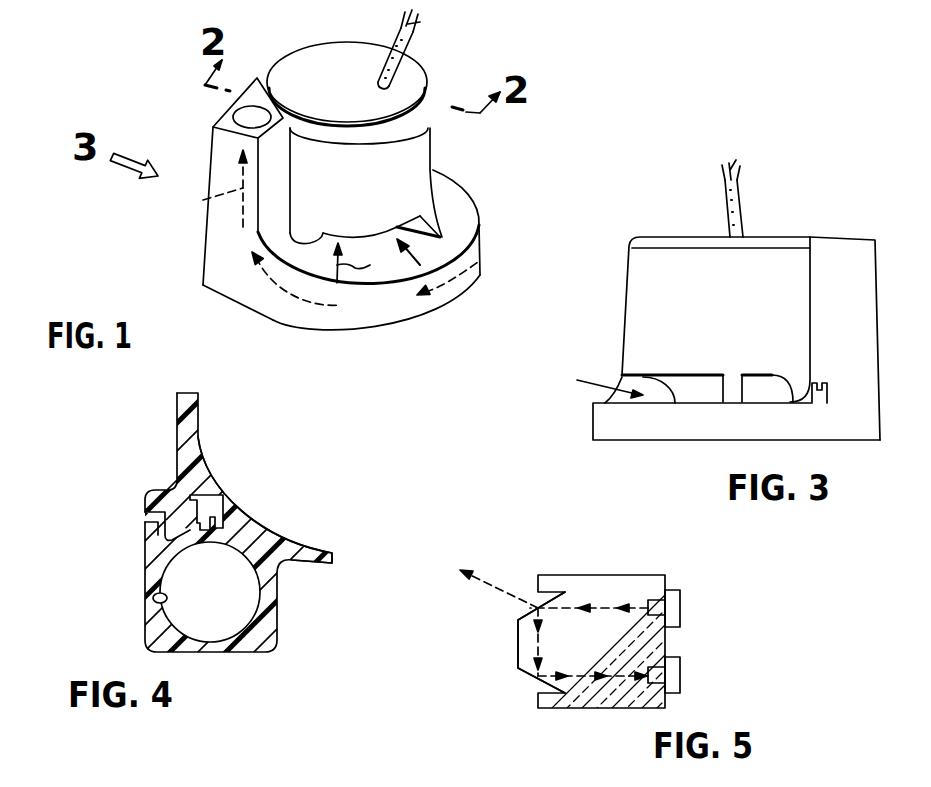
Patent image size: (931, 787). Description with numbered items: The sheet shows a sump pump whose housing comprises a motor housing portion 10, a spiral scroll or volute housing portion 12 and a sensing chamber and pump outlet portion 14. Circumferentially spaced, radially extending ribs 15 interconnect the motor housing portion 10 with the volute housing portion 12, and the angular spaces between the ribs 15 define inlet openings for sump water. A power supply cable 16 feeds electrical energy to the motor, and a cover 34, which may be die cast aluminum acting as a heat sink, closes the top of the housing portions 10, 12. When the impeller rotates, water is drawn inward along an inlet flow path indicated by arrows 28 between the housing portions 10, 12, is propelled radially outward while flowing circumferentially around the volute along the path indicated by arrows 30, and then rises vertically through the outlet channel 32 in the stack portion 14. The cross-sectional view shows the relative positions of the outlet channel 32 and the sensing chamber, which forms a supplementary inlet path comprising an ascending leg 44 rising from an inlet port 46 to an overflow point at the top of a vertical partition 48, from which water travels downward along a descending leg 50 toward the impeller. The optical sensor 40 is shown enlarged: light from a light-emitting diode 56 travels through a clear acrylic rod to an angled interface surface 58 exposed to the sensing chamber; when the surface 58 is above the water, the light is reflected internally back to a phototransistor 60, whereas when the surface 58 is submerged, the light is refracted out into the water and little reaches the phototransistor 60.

In FIG. 1, the motor housing portion 10 is at (373, 184).
In FIG. 3, the motor housing portion 10 is at (733, 307).
In FIG. 4, the motor housing portion 10 is at (306, 574).
In FIG. 1, the volute housing portion 12 is at (398, 326).
In FIG. 3, the volute housing portion 12 is at (754, 436).
In FIG. 1, the sensing chamber and pump outlet portion 14 is at (233, 179).
In FIG. 3, the sensing chamber and pump outlet portion 14 is at (851, 294).
In FIG. 4, the sensing chamber and pump outlet portion 14 is at (135, 565).
In FIG. 1, the ribs 15 is at (445, 222).
In FIG. 3, the ribs 15 is at (730, 387).
In FIG. 1, the power supply cable 16 is at (412, 40).
In FIG. 3, the power supply cable 16 is at (743, 200).
In FIG. 1, the inlet flow path arrows 28 is at (498, 142).
In FIG. 3, the inlet flow path arrows 28 is at (577, 380).
In FIG. 1, the circumferential flow path arrows 30 is at (203, 200).
In FIG. 1, the outlet channel 32 is at (240, 112).
In FIG. 4, the outlet channel 32 is at (163, 602).
In FIG. 1, the cover 34 is at (317, 60).
In FIG. 3, the cover 34 is at (663, 242).
In FIG. 5, the optical sensor 40 is at (592, 590).
In FIG. 4, the ascending leg 44 is at (158, 522).
In FIG. 3, the inlet port 46 is at (820, 383).
In FIG. 4, the vertical partition 48 is at (188, 525).
In FIG. 4, the descending leg 50 is at (215, 517).
In FIG. 5, the light-emitting diode 56 is at (680, 617).
In FIG. 5, the angled interface surface 58 is at (517, 672).
In FIG. 5, the phototransistor 60 is at (680, 667).